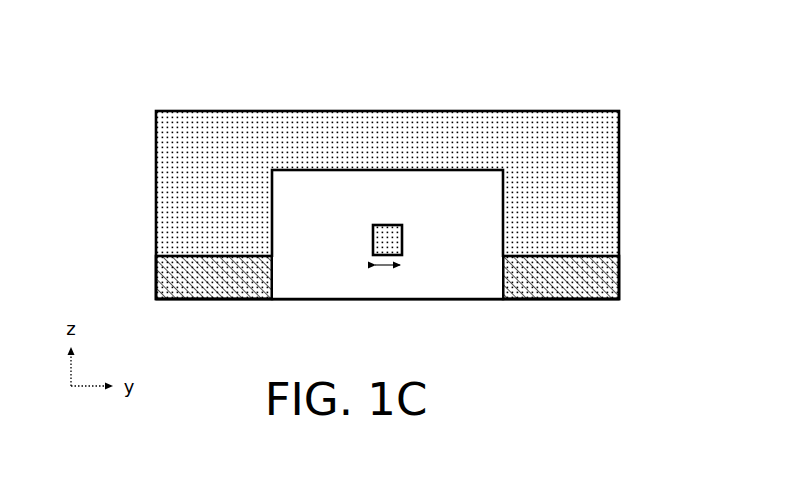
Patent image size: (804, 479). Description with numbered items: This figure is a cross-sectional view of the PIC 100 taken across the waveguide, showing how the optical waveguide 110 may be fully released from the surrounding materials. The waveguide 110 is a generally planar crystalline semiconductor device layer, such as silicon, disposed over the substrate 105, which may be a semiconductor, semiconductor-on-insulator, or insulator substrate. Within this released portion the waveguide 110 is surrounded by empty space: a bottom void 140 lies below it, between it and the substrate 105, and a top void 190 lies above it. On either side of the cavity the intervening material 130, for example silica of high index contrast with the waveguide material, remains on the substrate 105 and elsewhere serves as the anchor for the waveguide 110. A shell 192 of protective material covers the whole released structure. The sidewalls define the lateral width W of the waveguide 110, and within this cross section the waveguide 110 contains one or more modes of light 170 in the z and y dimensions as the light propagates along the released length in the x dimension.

The PIC 100 is at (335, 184).
The shell 192 is at (369, 151).
The top void 190 is at (442, 206).
The optical waveguide 110 is at (372, 223).
The modes of light 170 is at (403, 256).
The bottom void 140 is at (314, 288).
The intervening material 130 is at (195, 288).
The substrate 105 is at (367, 338).